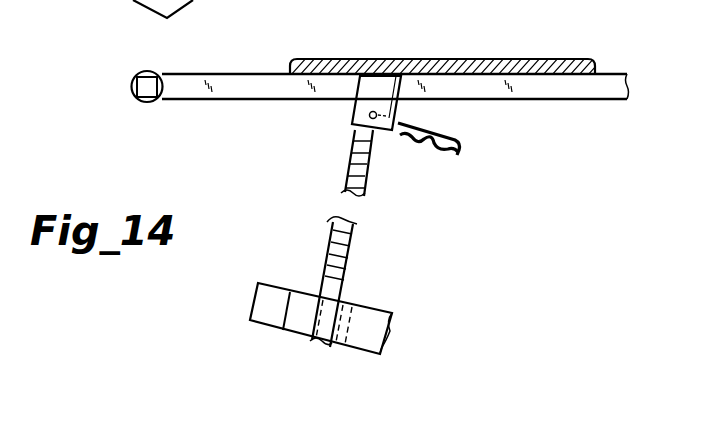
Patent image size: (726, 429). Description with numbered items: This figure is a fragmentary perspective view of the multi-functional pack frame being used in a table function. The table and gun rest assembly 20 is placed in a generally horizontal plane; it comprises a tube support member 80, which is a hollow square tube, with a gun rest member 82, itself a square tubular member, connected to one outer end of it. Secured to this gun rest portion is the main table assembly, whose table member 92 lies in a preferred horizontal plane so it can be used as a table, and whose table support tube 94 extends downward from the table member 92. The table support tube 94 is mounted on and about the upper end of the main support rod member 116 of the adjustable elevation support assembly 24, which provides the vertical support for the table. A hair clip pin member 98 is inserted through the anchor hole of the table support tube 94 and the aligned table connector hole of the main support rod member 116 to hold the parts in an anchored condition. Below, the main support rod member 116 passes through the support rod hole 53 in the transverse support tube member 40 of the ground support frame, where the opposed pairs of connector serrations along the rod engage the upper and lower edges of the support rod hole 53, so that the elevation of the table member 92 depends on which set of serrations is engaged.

The table and gun rest assembly 20 is at (205, 57).
The adjustable elevation support assembly 24 is at (370, 168).
The transverse support tube member 40 is at (366, 308).
The support rod hole 53 is at (320, 292).
The tube support member 80 is at (544, 90).
The gun rest member 82 is at (138, 76).
The table member 92 is at (537, 58).
The table support tube 94 is at (354, 98).
The hair clip pin member 98 is at (457, 152).
The main support rod member 116 is at (344, 179).